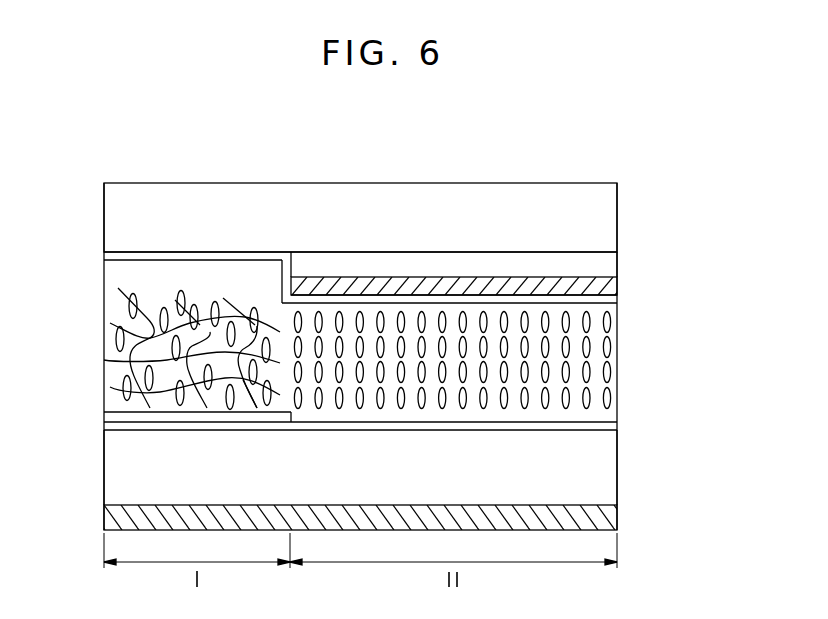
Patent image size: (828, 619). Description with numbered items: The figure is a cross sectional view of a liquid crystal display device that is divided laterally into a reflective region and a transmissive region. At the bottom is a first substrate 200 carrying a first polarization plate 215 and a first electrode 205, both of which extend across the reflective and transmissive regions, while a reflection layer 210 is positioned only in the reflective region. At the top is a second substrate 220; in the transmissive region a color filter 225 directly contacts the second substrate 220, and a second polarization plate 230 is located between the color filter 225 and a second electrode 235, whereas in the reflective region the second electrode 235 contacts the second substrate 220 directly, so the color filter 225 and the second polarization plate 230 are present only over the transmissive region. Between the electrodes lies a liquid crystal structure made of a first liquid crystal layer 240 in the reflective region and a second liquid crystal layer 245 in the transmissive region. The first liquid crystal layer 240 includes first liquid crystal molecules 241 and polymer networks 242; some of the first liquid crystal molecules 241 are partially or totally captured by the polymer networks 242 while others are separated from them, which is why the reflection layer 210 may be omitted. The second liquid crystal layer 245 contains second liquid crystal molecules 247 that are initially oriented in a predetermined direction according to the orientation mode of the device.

The first substrate 200 is at (612, 472).
The first electrode 205 is at (612, 430).
The reflection layer 210 is at (104, 417).
The first polarization plate 215 is at (612, 518).
The second substrate 220 is at (613, 212).
The color filter 225 is at (615, 262).
The second polarization plate 230 is at (613, 285).
The second electrode 235 is at (615, 300).
The first liquid crystal layer 240 is at (140, 349).
The first liquid crystal molecules 241 is at (116, 338).
The polymer networks 242 is at (110, 359).
The second liquid crystal layer 245 is at (511, 362).
The second liquid crystal molecules 247 is at (608, 348).